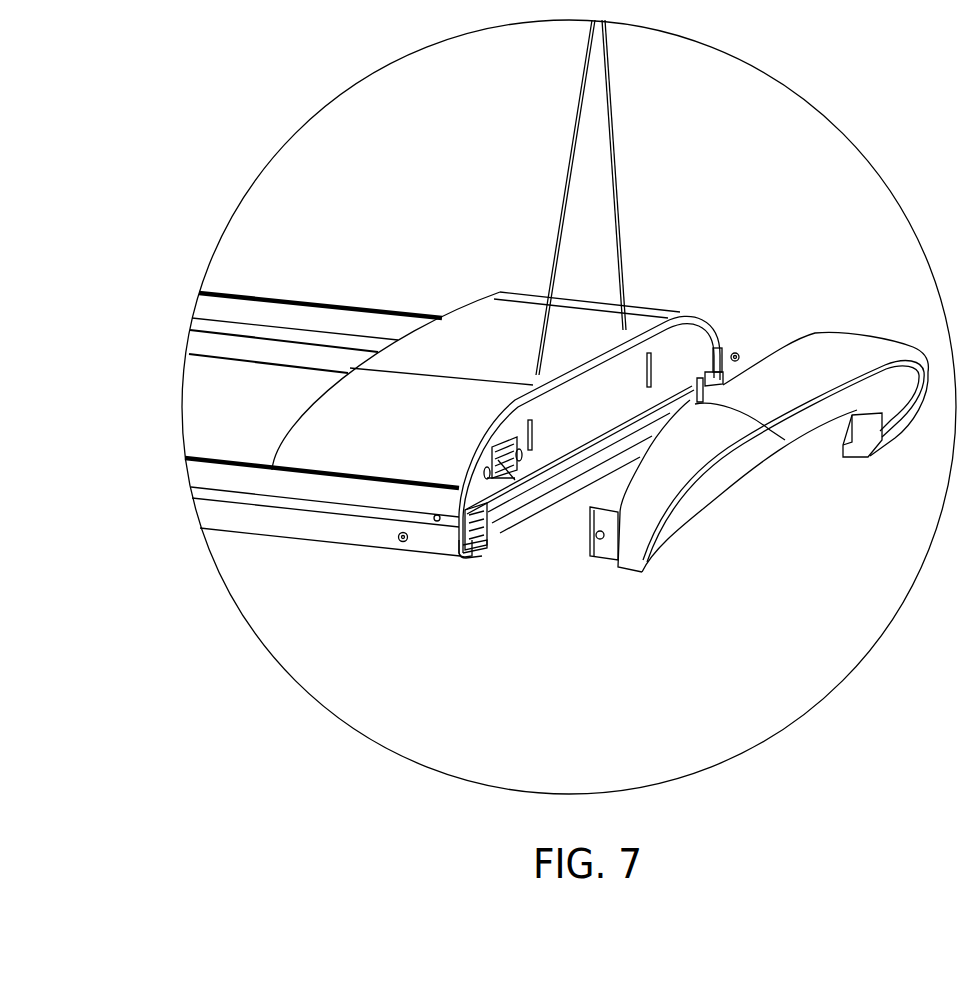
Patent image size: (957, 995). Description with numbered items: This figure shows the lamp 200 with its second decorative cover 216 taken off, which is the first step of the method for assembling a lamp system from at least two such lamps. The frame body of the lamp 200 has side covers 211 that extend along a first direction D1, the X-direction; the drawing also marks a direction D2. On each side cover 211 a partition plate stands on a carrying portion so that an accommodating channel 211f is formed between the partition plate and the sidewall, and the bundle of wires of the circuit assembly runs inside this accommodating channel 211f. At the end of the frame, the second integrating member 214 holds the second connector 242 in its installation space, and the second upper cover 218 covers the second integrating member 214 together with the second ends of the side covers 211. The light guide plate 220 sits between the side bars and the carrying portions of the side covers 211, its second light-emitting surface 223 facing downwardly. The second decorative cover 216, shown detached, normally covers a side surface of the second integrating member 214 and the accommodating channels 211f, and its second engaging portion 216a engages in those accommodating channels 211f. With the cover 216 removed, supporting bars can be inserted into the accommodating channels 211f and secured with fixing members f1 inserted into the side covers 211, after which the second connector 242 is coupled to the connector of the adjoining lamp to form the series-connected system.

The lamp 200 is at (299, 258).
The side cover 211 is at (327, 530).
The accommodating channel 211f is at (467, 548).
The fixing member f1 is at (403, 543).
The second integrating member 214 is at (693, 343).
The second decorative cover 216 is at (861, 345).
The second engaging portion 216a is at (602, 552).
The second upper cover 218 is at (500, 295).
The light guide plate 220 is at (497, 527).
The second light-emitting surface 223 is at (575, 505).
The second connector 242 is at (505, 537).
The first direction D1 is at (722, 228).
The second direction D2 is at (722, 228).